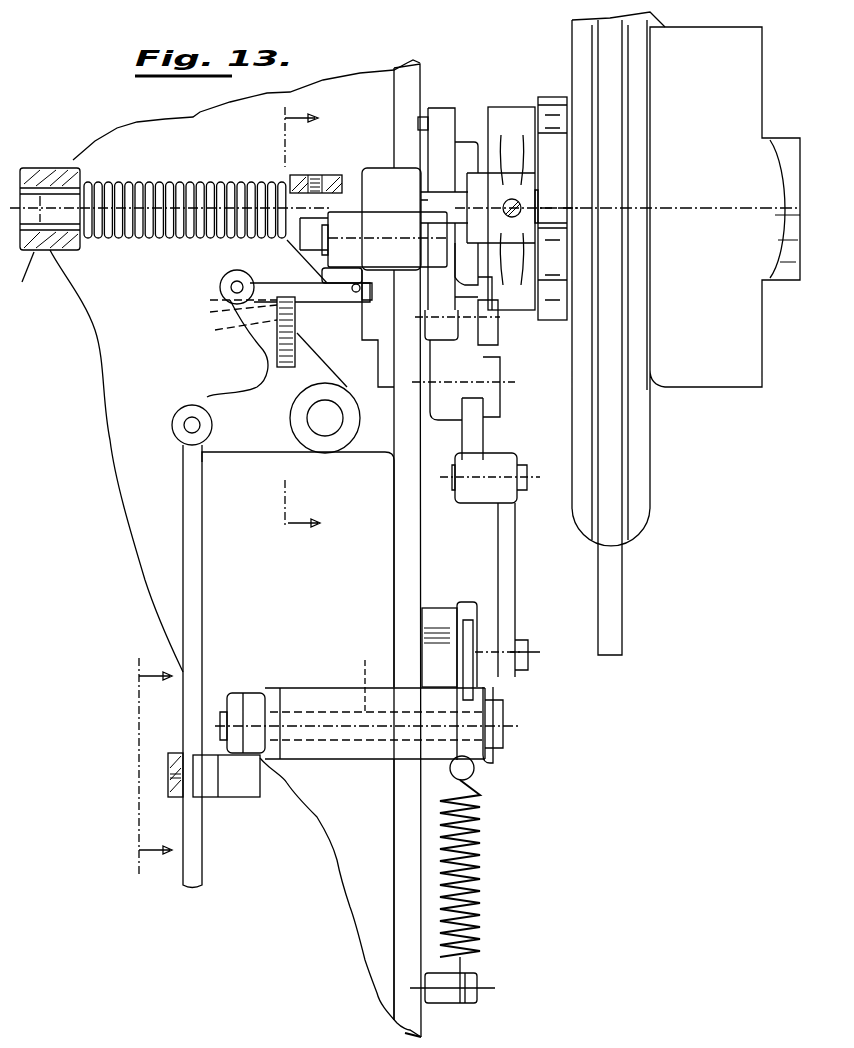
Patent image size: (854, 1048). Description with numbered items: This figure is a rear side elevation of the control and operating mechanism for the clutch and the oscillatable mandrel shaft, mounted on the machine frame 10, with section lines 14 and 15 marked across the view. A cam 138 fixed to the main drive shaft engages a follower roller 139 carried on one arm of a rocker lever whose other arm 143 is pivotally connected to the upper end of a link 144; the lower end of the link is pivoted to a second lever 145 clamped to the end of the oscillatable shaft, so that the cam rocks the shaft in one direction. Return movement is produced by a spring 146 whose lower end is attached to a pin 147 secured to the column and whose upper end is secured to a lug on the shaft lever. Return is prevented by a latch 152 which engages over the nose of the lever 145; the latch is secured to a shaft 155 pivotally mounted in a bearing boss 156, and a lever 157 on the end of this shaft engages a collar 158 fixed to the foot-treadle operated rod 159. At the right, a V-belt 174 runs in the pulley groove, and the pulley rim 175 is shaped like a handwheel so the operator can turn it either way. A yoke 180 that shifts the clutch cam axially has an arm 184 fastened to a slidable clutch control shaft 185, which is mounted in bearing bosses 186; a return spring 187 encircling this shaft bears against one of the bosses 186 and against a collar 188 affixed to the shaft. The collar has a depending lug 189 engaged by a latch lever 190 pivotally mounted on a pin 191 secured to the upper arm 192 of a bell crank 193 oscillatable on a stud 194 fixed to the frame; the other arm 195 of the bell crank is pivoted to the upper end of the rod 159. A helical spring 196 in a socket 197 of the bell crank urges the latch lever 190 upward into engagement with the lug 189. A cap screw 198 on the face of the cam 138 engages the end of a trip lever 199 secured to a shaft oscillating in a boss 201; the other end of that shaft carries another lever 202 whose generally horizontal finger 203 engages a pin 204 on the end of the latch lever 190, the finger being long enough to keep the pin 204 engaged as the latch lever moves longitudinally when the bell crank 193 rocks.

The frame 10 is at (402, 518).
The section line 14 is at (306, 323).
The section line 15 is at (140, 766).
The cam 138 is at (450, 105).
The follower roller 139 is at (447, 325).
The other arm of the rocker lever 143 is at (480, 437).
The link 144 is at (505, 555).
The second lever 145 is at (472, 602).
The spring 146 is at (480, 862).
The pin 147 is at (478, 978).
The latch 152 is at (470, 628).
The shaft 155 is at (367, 707).
The bearing boss 156 is at (330, 752).
The lever 157 is at (252, 692).
The collar 158 is at (207, 787).
The operating rod 159 is at (197, 607).
The V-belt 174 is at (612, 607).
The rim 175 is at (650, 481).
The yoke 180 is at (503, 110).
The arm of the yoke 184 is at (545, 112).
The clutch control shaft 185 is at (58, 180).
The bearing bosses 186 is at (378, 148).
The return spring 187 is at (215, 166).
The collar 188 is at (292, 175).
The depending lug 189 is at (300, 252).
The latch lever 190 is at (316, 305).
The pin 191 is at (232, 290).
The upper arm 192 is at (265, 345).
The bell crank 193 is at (270, 391).
The stud 194 is at (325, 418).
The other arm of the bell crank 195 is at (245, 436).
The helical spring 196 is at (218, 315).
The socket 197 is at (229, 334).
The cap screw 198 is at (420, 124).
The trip lever 199 is at (440, 215).
The boss 201 is at (387, 249).
The lever 202 is at (340, 222).
The finger 203 is at (322, 278).
The pin 204 is at (360, 304).